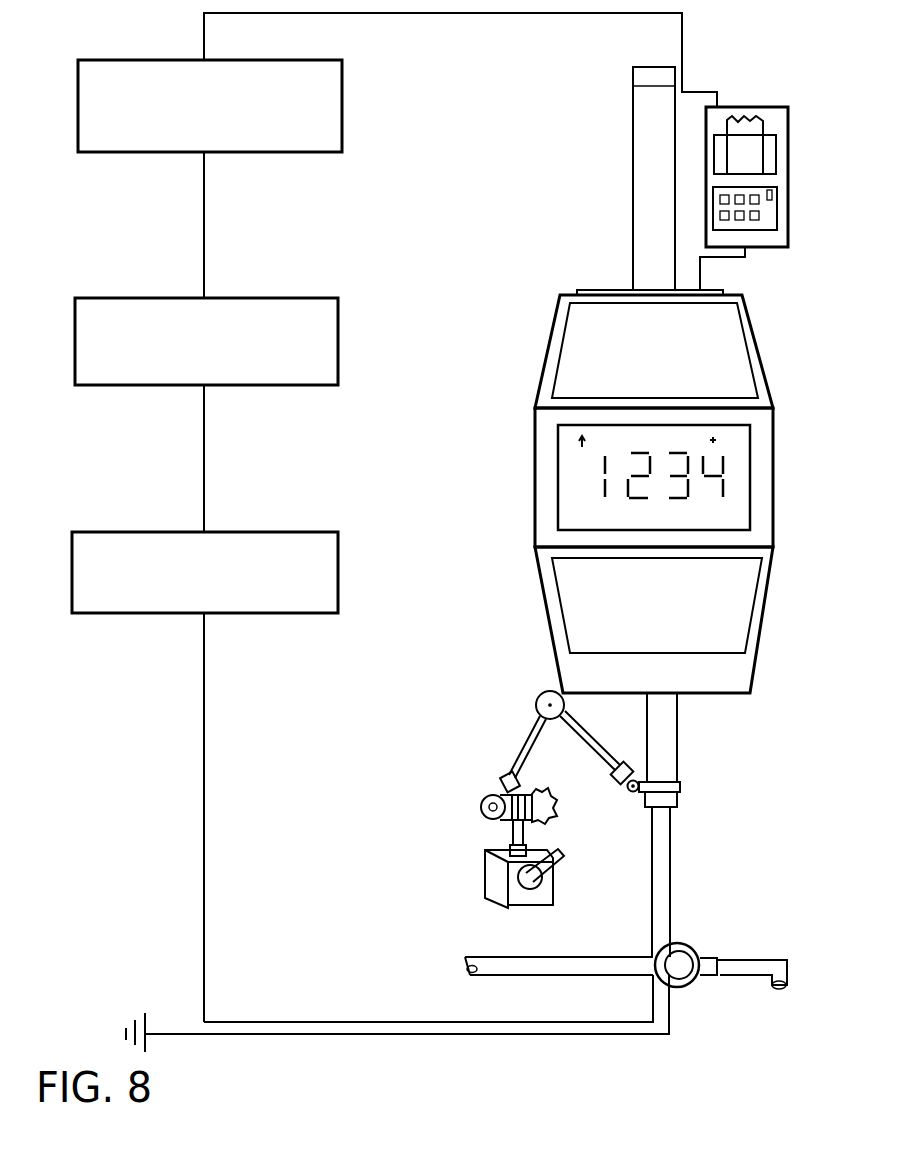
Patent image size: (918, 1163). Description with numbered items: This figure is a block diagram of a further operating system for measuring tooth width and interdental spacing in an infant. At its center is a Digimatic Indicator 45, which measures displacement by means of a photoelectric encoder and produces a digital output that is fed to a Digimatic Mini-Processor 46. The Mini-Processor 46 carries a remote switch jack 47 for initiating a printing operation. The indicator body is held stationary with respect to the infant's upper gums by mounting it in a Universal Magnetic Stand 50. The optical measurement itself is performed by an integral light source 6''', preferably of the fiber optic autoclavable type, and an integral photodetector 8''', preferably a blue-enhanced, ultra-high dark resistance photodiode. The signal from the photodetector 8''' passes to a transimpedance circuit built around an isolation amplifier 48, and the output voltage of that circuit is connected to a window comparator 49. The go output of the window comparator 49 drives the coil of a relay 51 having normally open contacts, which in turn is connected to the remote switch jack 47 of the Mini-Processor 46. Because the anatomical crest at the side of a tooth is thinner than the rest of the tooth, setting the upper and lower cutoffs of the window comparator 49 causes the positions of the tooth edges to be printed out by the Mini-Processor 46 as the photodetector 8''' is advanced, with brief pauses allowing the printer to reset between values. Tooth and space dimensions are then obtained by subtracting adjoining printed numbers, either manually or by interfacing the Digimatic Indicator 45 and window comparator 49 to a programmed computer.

The relay 51 is at (342, 108).
The window comparator 49 is at (338, 345).
The isolation amplifier 48 is at (338, 583).
The remote switch jack 47 is at (748, 100).
The Digimatic Mini-Processor 46 is at (790, 175).
The Digimatic Indicator 45 is at (773, 460).
The Universal Magnetic Stand 50 is at (483, 870).
The light source 6''' is at (637, 954).
The photodetector 8''' is at (688, 982).